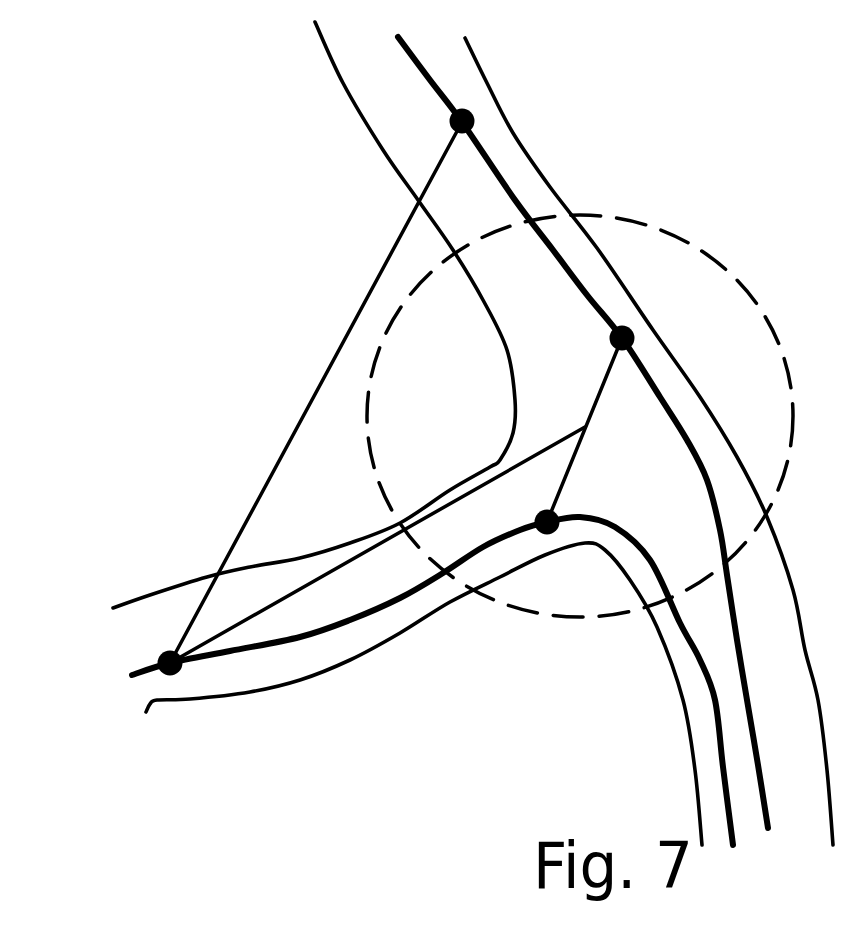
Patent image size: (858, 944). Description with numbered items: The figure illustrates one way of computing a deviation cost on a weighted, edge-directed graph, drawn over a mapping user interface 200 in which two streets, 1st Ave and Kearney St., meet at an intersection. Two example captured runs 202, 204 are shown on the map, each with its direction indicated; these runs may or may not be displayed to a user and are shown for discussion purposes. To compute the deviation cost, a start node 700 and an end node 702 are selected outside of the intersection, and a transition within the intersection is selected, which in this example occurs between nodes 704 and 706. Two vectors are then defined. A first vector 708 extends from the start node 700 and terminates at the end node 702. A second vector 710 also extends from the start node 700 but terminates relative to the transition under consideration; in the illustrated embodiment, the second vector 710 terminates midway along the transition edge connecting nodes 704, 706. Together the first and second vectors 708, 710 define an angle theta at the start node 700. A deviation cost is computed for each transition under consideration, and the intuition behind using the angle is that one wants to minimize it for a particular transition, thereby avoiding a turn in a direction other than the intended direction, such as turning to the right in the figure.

The mapping user interface 200 is at (267, 167).
The captured run 202 is at (131, 674).
The captured run 204 is at (731, 568).
The start node 700 is at (160, 678).
The end node 702 is at (473, 110).
The node 704 is at (556, 514).
The node 706 is at (612, 331).
The first vector 708 is at (242, 525).
The second vector 710 is at (322, 578).